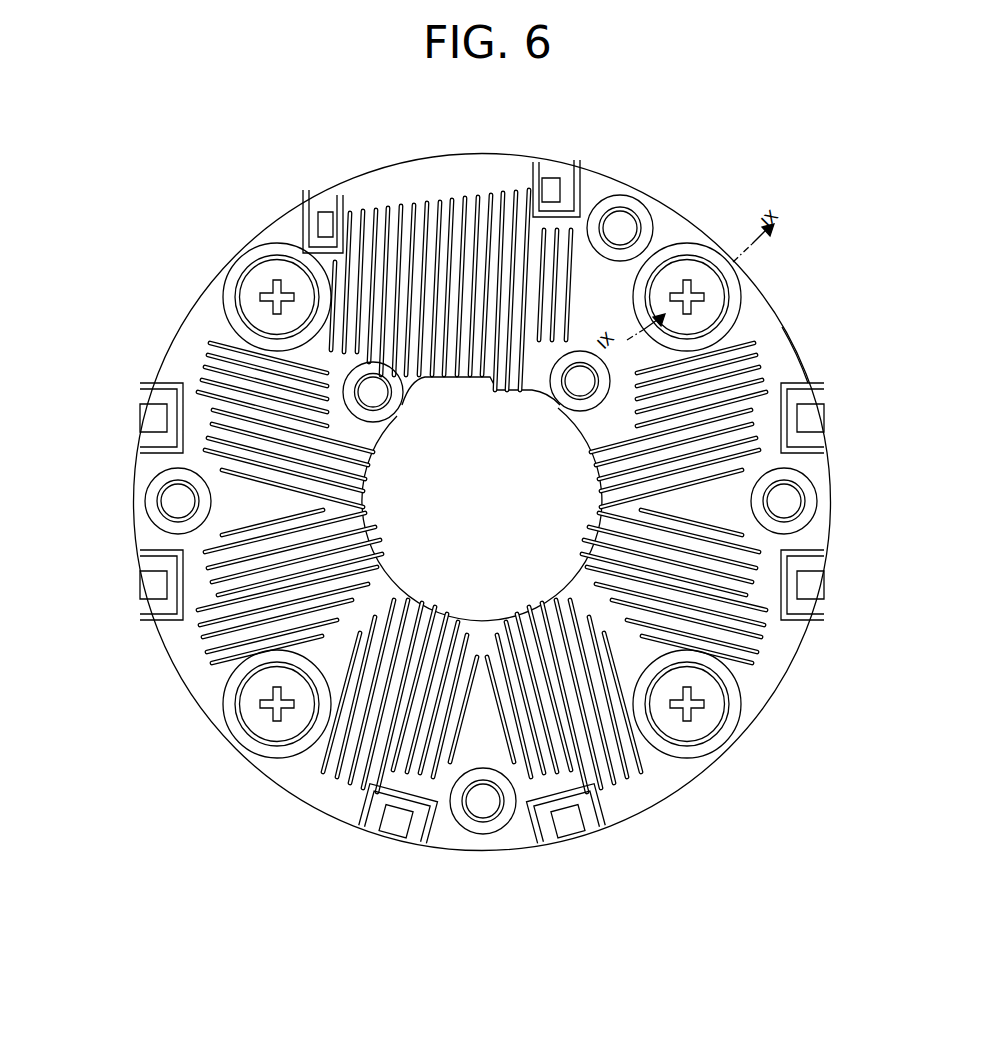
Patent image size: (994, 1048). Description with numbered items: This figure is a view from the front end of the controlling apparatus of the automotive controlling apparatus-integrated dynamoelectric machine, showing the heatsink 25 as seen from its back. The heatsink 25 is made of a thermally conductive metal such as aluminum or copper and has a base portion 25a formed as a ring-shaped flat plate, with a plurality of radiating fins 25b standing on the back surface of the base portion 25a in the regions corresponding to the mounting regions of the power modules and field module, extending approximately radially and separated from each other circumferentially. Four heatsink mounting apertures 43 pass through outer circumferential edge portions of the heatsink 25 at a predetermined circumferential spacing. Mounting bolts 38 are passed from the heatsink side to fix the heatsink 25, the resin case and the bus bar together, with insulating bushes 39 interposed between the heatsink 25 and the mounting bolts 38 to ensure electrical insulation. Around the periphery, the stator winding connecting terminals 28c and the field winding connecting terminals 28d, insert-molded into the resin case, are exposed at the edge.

The heatsink 25 is at (773, 327).
The base portion 25a is at (782, 362).
The radiating fins 25b is at (715, 318).
The stator winding connecting terminals 28c is at (155, 415).
The field winding connecting terminals 28d is at (323, 212).
The mounting bolts 38 is at (255, 290).
The insulating bushes 39 is at (240, 259).
The heatsink mounting apertures 43 is at (168, 507).